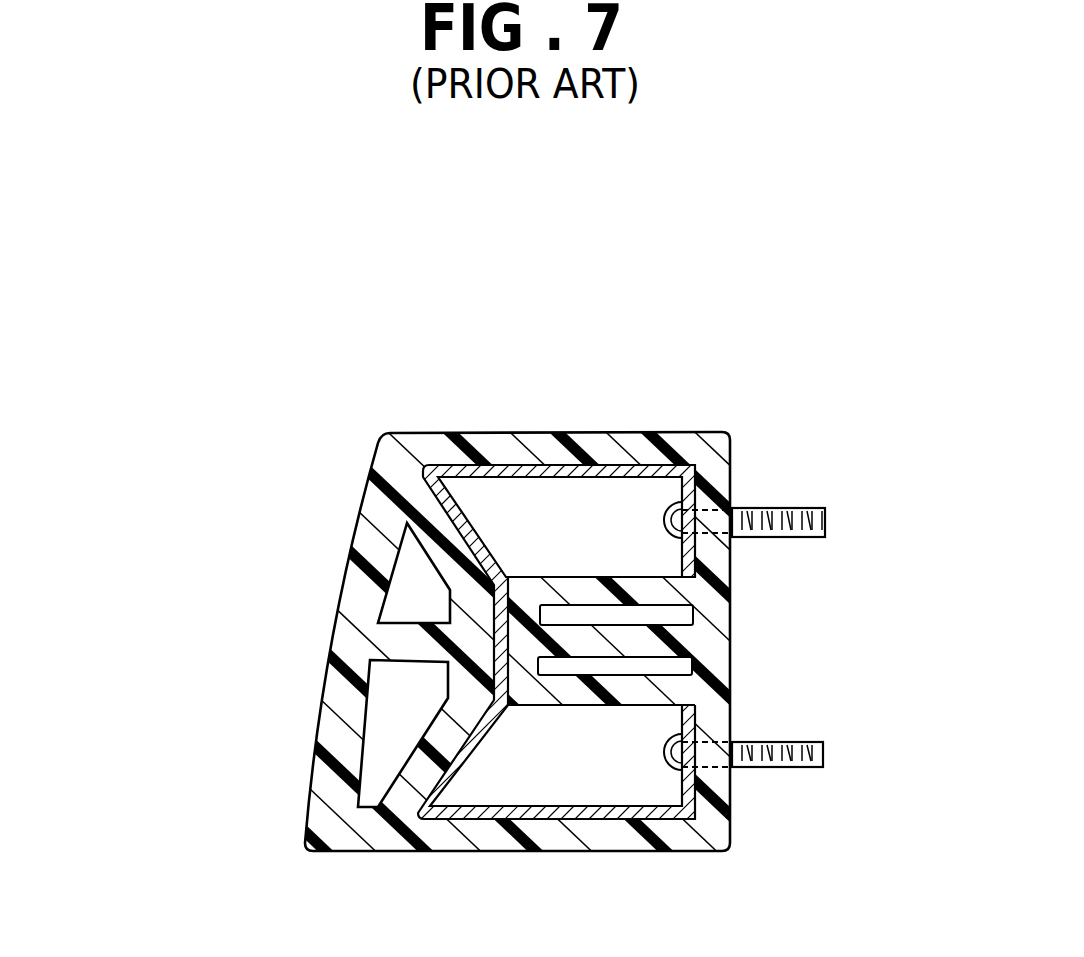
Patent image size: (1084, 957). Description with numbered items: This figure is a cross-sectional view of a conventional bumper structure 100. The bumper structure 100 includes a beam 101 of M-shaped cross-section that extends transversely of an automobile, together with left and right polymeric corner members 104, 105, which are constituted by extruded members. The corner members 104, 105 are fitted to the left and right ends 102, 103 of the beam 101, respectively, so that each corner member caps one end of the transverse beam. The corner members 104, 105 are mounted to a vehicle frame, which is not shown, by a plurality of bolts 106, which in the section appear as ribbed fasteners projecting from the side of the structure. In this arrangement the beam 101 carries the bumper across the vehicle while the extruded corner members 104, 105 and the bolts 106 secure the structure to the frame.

The bumper structure 100 is at (400, 378).
The beam 101 is at (535, 435).
The left end of the beam 102 is at (542, 581).
The right end of the beam 103 is at (650, 470).
The left corner member 104 is at (250, 665).
The right corner member 105 is at (337, 635).
The bolt 106 is at (815, 510).